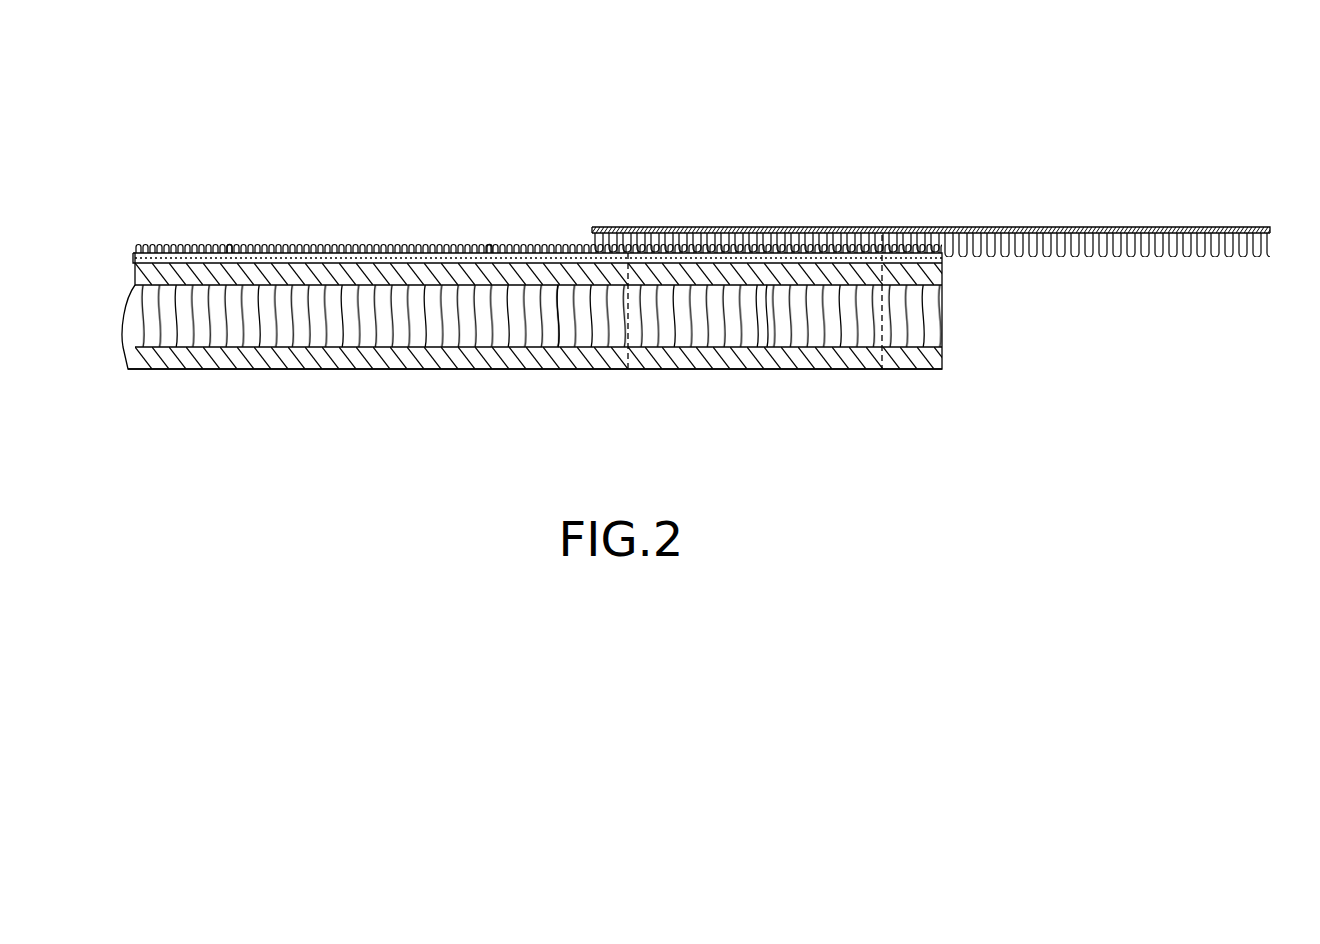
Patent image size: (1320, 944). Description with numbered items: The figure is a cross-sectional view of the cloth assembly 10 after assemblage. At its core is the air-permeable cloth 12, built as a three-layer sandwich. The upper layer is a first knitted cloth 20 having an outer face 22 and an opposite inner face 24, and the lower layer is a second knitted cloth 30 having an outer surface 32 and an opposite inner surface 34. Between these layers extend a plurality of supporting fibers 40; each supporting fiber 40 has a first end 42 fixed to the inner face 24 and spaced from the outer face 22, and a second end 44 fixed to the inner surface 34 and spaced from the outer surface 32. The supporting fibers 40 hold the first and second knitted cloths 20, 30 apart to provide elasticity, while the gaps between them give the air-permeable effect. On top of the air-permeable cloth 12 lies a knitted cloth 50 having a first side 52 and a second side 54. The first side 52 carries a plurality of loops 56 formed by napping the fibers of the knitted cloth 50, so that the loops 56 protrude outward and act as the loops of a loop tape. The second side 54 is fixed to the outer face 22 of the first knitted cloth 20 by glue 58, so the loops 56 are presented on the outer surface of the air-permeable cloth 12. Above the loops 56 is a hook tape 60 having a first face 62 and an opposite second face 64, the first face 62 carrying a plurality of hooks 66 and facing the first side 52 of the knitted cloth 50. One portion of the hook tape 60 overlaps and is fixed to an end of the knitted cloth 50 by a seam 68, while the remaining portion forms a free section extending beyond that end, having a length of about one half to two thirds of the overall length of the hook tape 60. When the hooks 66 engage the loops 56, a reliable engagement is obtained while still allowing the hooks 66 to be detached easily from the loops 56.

The cloth assembly 10 is at (379, 126).
The air-permeable cloth 12 is at (222, 402).
The first knitted cloth 20 is at (365, 280).
The outer face 22 is at (410, 262).
The inner face 24 is at (497, 291).
The second knitted cloth 30 is at (437, 363).
The outer surface 32 is at (502, 368).
The inner surface 34 is at (407, 336).
The supporting fibers 40 is at (568, 320).
The first end 42 is at (572, 286).
The second end 44 is at (562, 344).
The knitted cloth 50 is at (276, 260).
The first side 52 is at (329, 251).
The second side 54 is at (178, 265).
The loops 56 is at (232, 248).
The glue 58 is at (447, 259).
The hook tape 60 is at (1263, 228).
The first face 62 is at (1175, 236).
The second face 64 is at (1121, 228).
The hooks 66 is at (1118, 259).
The seam 68 is at (882, 298).